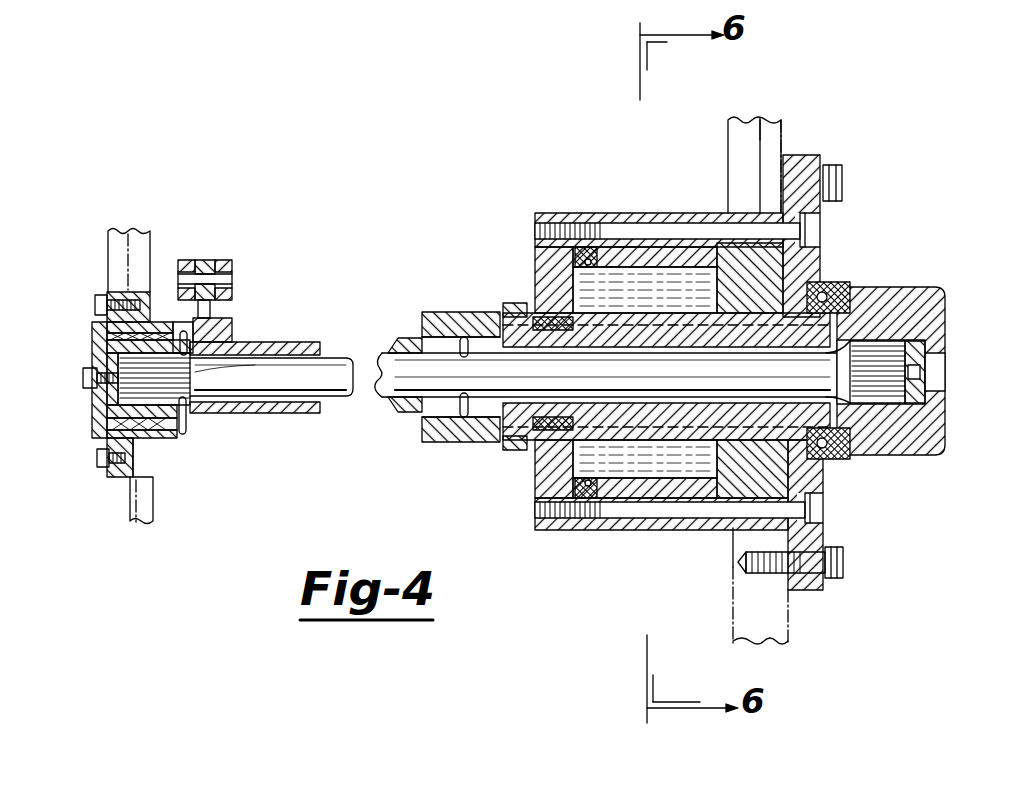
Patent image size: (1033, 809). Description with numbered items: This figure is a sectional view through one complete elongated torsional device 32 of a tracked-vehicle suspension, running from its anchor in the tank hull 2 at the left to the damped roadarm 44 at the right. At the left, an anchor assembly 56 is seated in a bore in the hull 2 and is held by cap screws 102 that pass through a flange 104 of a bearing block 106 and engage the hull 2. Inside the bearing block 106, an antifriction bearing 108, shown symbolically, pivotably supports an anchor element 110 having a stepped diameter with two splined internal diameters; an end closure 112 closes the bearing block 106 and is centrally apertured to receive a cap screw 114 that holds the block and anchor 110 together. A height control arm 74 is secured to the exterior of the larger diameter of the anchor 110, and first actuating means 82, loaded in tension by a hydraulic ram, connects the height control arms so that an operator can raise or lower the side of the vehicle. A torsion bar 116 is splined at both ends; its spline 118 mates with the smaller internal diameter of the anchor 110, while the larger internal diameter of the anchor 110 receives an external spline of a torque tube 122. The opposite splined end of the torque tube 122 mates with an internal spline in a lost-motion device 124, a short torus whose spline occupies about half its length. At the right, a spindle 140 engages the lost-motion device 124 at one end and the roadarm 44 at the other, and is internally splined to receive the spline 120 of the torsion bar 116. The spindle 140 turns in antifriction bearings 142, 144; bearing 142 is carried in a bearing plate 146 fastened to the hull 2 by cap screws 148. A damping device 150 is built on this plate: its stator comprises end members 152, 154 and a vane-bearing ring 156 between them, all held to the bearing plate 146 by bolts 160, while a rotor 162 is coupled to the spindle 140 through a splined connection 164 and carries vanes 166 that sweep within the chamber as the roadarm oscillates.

The tank hull 2 is at (120, 232).
The elongated torsional device 32 is at (425, 408).
The roadarm 44 is at (911, 300).
The anchor assembly 56 is at (153, 447).
The height control arm 74 is at (213, 264).
The first actuating means 82 is at (190, 262).
The cap screw 102 is at (96, 296).
The flange 104 is at (125, 522).
The bearing block 106 is at (158, 312).
The bearing 108 is at (155, 420).
The anchor element 110 is at (234, 330).
The end closure 112 is at (96, 340).
The cap screw 114 is at (85, 382).
The torsion bar 116 is at (346, 356).
The spline 118 is at (176, 392).
The spline 120 is at (884, 396).
The torque tube 122 is at (300, 413).
The lost-motion device 124 is at (400, 418).
The spindle 140 is at (508, 445).
The antifriction bearing 142 is at (813, 282).
The antifriction bearing 144 is at (550, 318).
The bearing plate 146 is at (808, 155).
The cap screw 148 is at (842, 184).
The damping device 150 is at (684, 208).
The end member 152 is at (765, 118).
The end member 154 is at (558, 218).
The vane-bearing ring 156 is at (588, 532).
The bolt 160 is at (534, 232).
The rotor 162 is at (704, 292).
The splined connection 164 is at (608, 328).
The vane 166 is at (578, 282).